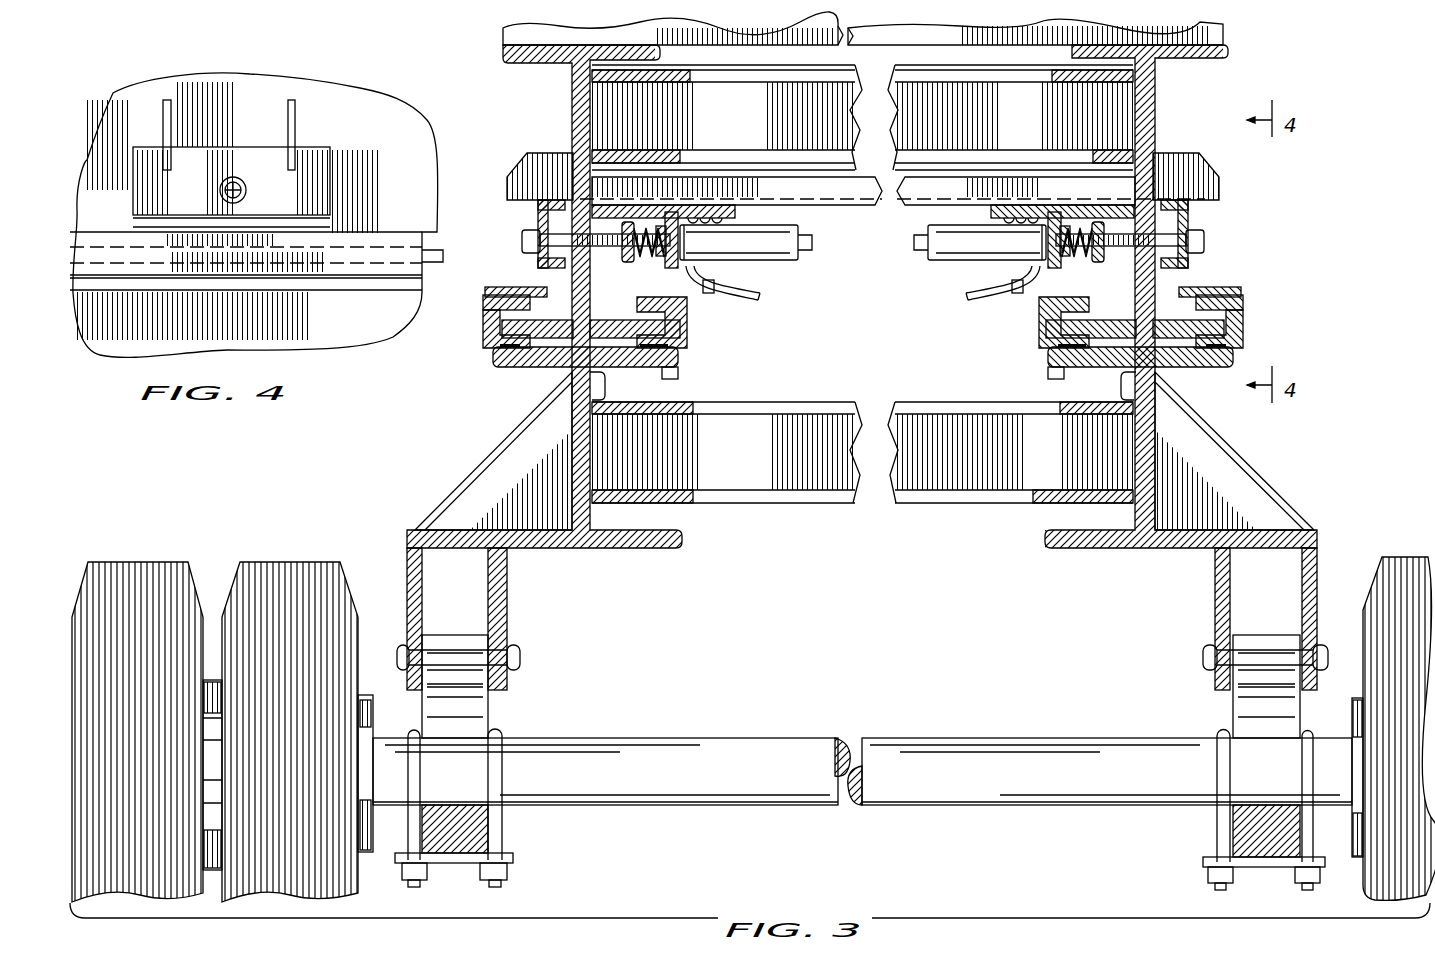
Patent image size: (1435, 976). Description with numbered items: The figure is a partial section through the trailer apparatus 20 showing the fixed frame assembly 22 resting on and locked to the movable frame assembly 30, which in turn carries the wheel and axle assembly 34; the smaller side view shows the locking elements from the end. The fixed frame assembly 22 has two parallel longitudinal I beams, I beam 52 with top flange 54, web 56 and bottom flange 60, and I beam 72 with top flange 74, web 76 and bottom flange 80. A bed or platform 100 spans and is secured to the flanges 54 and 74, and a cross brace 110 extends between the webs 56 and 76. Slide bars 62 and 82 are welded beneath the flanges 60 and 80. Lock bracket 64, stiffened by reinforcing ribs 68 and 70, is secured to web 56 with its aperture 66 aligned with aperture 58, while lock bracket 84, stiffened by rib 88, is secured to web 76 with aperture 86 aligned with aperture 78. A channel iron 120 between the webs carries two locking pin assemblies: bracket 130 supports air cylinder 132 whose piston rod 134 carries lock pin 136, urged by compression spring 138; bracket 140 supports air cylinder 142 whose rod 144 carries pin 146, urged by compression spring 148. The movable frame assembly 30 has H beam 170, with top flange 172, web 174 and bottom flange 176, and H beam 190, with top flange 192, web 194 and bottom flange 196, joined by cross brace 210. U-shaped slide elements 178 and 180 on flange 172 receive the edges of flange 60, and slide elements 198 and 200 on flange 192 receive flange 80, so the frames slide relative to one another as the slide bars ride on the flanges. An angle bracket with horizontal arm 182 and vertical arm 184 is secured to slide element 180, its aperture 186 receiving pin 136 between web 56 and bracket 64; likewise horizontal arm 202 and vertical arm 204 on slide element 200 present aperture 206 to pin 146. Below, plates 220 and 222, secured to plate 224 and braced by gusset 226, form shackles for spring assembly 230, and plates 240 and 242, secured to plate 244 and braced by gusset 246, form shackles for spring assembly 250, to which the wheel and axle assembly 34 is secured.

In FIG. 3, the trailer apparatus 20 is at (1142, 293).
In FIG. 3, the fixed frame assembly 22 is at (568, 296).
In FIG. 4, the fixed frame assembly 22 is at (271, 207).
In FIG. 3, the movable frame assembly 30 is at (1248, 451).
In FIG. 4, the movable frame assembly 30 is at (332, 345).
In FIG. 3, the wheel and axle assembly 34 is at (920, 731).
In FIG. 3, the I beam 52 is at (1142, 293).
In FIG. 4, the I beam 52 is at (430, 119).
In FIG. 3, the top flange 54 is at (1228, 51).
In FIG. 3, the web 56 is at (1157, 96).
In FIG. 4, the web 56 is at (420, 170).
In FIG. 3, the aperture 58 is at (1090, 326).
In FIG. 3, the bottom flange 60 is at (1242, 334).
In FIG. 3, the slide bar 62 is at (1160, 362).
In FIG. 3, the lock bracket 64 is at (1190, 263).
In FIG. 4, the lock bracket 64 is at (136, 190).
In FIG. 3, the aperture 66 is at (1205, 232).
In FIG. 4, the aperture 66 is at (222, 190).
In FIG. 3, the reinforcing rib 68 is at (1216, 176).
In FIG. 4, the reinforcing rib 68 is at (171, 130).
In FIG. 4, the reinforcing rib 70 is at (297, 130).
In FIG. 3, the I beam 72 is at (503, 46).
In FIG. 3, the top flange 74 is at (516, 63).
In FIG. 3, the web 76 is at (572, 112).
In FIG. 3, the aperture 78 is at (668, 266).
In FIG. 3, the bottom flange 80 is at (591, 312).
In FIG. 3, the slide bar 82 is at (542, 366).
In FIG. 3, the lock bracket 84 is at (545, 261).
In FIG. 3, the aperture 86 is at (545, 231).
In FIG. 3, the reinforcing rib 88 is at (522, 184).
In FIG. 3, the bed or platform 100 is at (1226, 34).
In FIG. 3, the cross brace 110 is at (1003, 66).
In FIG. 3, the channel iron 120 is at (862, 206).
In FIG. 3, the bracket 130 is at (1064, 258).
In FIG. 3, the air cylinder 132 is at (950, 262).
In FIG. 3, the piston rod 134 is at (1088, 258).
In FIG. 3, the lock pin 136 is at (1206, 238).
In FIG. 4, the lock pin 136 is at (245, 182).
In FIG. 3, the compression spring 138 is at (1096, 223).
In FIG. 3, the bracket 140 is at (690, 195).
In FIG. 3, the air cylinder 142 is at (785, 262).
In FIG. 3, the rod 144 is at (650, 258).
In FIG. 3, the pin 146 is at (522, 240).
In FIG. 3, the compression spring 148 is at (628, 223).
In FIG. 3, the H beam 170 is at (1127, 384).
In FIG. 3, the top flange 172 is at (1080, 372).
In FIG. 3, the web 174 is at (1140, 428).
In FIG. 3, the bottom flange 176 is at (1045, 536).
In FIG. 3, the slide element 178 is at (1042, 341).
In FIG. 3, the slide element 180 is at (1220, 300).
In FIG. 4, the slide element 180 is at (395, 233).
In FIG. 3, the horizontal arm 182 is at (1240, 290).
In FIG. 3, the vertical arm 184 is at (1170, 198).
In FIG. 3, the aperture 186 is at (1133, 206).
In FIG. 3, the H beam 190 is at (592, 331).
In FIG. 3, the top flange 192 is at (668, 370).
In FIG. 3, the web 194 is at (586, 380).
In FIG. 3, the bottom flange 196 is at (682, 540).
In FIG. 3, the slide element 198 is at (690, 313).
In FIG. 3, the slide element 200 is at (492, 338).
In FIG. 3, the horizontal arm 202 is at (486, 300).
In FIG. 3, the vertical arm 204 is at (524, 291).
In FIG. 3, the aperture 206 is at (561, 198).
In FIG. 3, the cross brace 210 is at (885, 401).
In FIG. 3, the plate 220 is at (1218, 600).
In FIG. 3, the plate 222 is at (1318, 562).
In FIG. 3, the plate 224 is at (1260, 549).
In FIG. 3, the gusset 226 is at (1270, 478).
In FIG. 3, the spring assembly 230 is at (1225, 700).
In FIG. 3, the plate 240 is at (507, 592).
In FIG. 3, the plate 242 is at (408, 560).
In FIG. 3, the plate 244 is at (452, 550).
In FIG. 3, the gusset 246 is at (490, 482).
In FIG. 3, the spring assembly 250 is at (500, 718).